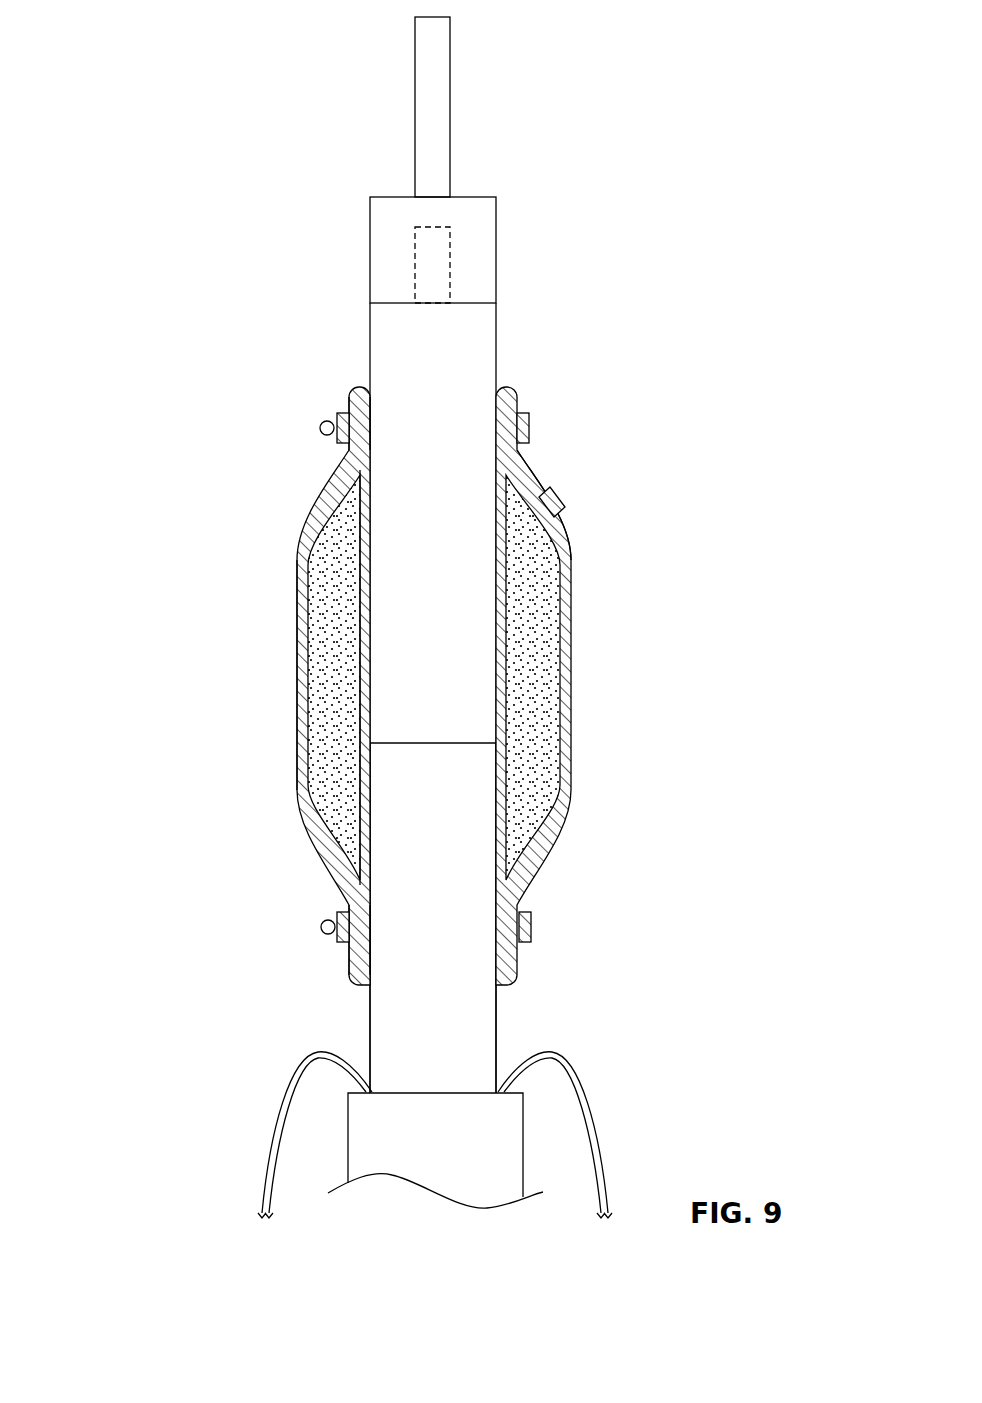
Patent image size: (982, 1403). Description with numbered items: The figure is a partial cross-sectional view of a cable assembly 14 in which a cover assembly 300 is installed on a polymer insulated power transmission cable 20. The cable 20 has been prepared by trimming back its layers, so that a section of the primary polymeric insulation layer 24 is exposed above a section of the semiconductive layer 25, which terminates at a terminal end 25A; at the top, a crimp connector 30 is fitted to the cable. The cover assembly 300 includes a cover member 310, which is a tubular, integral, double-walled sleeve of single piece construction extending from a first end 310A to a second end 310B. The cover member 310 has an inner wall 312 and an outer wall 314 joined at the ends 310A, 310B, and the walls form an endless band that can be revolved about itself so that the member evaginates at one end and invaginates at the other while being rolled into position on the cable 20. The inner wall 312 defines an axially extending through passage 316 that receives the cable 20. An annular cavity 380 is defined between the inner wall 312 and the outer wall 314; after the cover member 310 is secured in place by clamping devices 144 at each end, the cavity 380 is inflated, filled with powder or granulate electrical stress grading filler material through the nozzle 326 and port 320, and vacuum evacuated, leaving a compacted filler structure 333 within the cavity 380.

The cable assembly 14 is at (163, 125).
The connector 30 is at (497, 237).
The primary polymeric conductor insulation layer 24 is at (478, 367).
The polymer insulated electrical power transmission cable 20 is at (500, 1037).
The semiconductive layer 25 is at (468, 873).
The terminal end 25A is at (433, 743).
The cover assembly 300 is at (471, 687).
The cover member 310 is at (440, 687).
The first end 310A is at (360, 386).
The second end 310B is at (360, 986).
The inner wall 312 is at (365, 530).
The outer wall 314 is at (302, 625).
The through passage 316 is at (471, 960).
The port 320 is at (535, 478).
The nozzle 326 is at (556, 500).
The compacted filler structure 333 is at (540, 733).
The cavity 380 is at (535, 673).
The clamping devices 144 is at (531, 428).